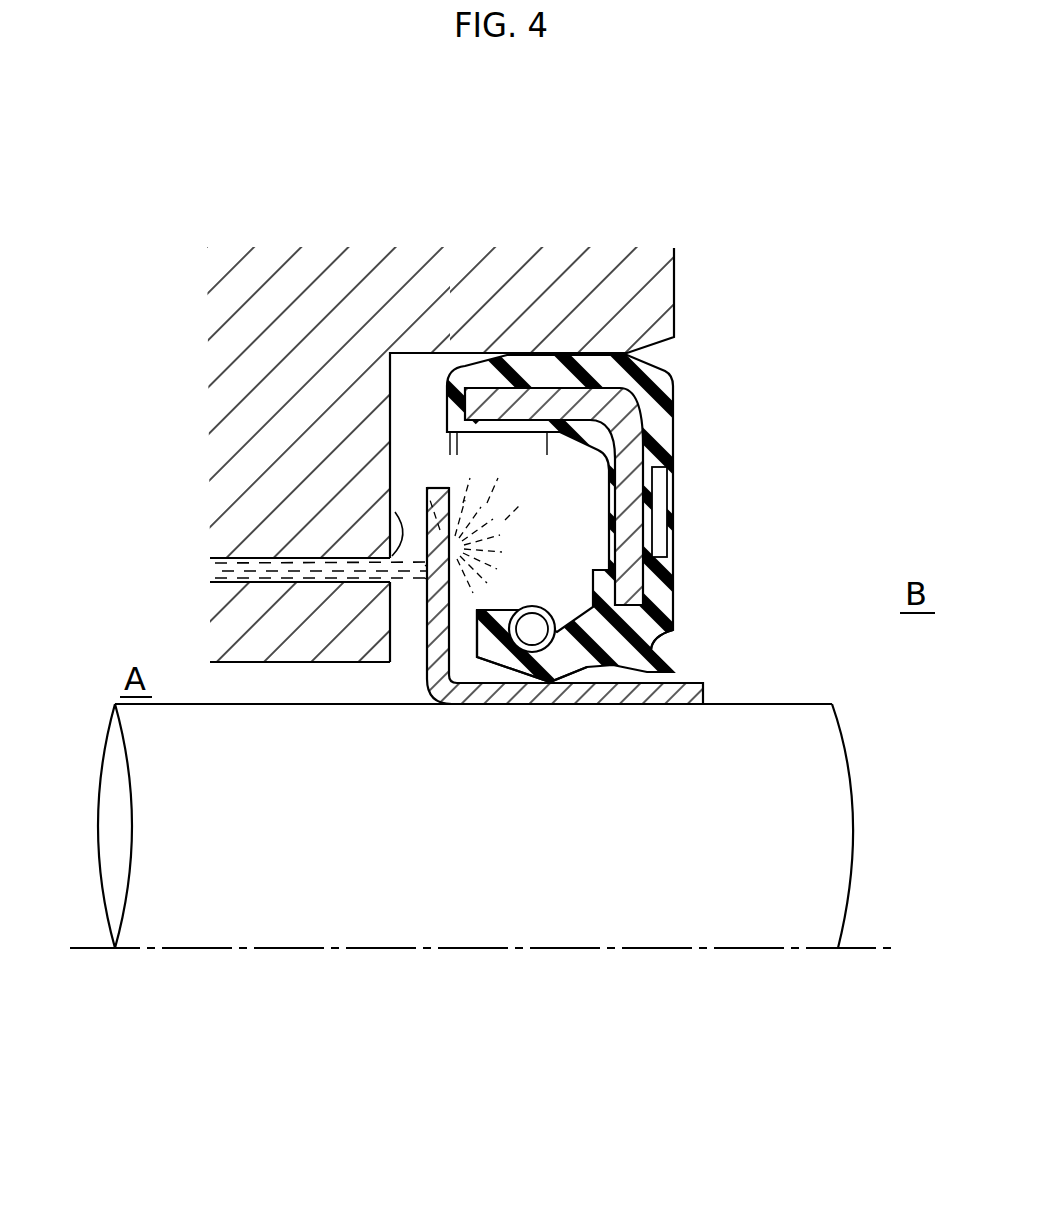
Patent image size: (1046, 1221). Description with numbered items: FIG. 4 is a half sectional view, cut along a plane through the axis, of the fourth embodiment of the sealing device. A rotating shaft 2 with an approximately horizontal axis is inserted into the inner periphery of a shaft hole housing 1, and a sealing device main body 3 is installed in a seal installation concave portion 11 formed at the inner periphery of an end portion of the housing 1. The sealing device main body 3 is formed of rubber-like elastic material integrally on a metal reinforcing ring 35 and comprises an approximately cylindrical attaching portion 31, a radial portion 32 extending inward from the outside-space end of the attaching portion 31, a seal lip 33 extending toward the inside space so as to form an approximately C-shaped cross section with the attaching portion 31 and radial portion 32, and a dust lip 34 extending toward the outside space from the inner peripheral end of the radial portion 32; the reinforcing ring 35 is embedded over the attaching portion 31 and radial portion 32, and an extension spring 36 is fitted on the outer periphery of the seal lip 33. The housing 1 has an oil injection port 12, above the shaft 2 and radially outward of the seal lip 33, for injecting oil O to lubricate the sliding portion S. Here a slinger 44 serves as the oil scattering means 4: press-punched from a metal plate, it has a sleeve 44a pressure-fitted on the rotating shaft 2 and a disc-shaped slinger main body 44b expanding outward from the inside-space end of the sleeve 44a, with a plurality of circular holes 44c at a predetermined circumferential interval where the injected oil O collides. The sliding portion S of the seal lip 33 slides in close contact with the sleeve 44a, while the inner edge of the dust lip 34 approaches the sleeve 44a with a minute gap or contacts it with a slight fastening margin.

The shaft hole housing 1 is at (283, 272).
The rotating shaft 2 is at (260, 905).
The sealing device main body 3 is at (643, 524).
The oil scattering means 4 is at (404, 553).
The seal installation concave portion 11 is at (423, 373).
The oil injection port 12 is at (395, 512).
The attaching portion 31 is at (530, 370).
The radial portion 32 is at (672, 447).
The seal lip 33 is at (475, 670).
The dust lip 34 is at (680, 668).
The reinforcing ring 35 is at (672, 522).
The extension spring 36 is at (540, 605).
The slinger 44 is at (404, 571).
The sleeve 44a is at (597, 687).
The slinger main body 44b is at (432, 640).
The circular holes 44c is at (428, 568).
The oil O is at (495, 534).
The sliding portion S is at (522, 706).